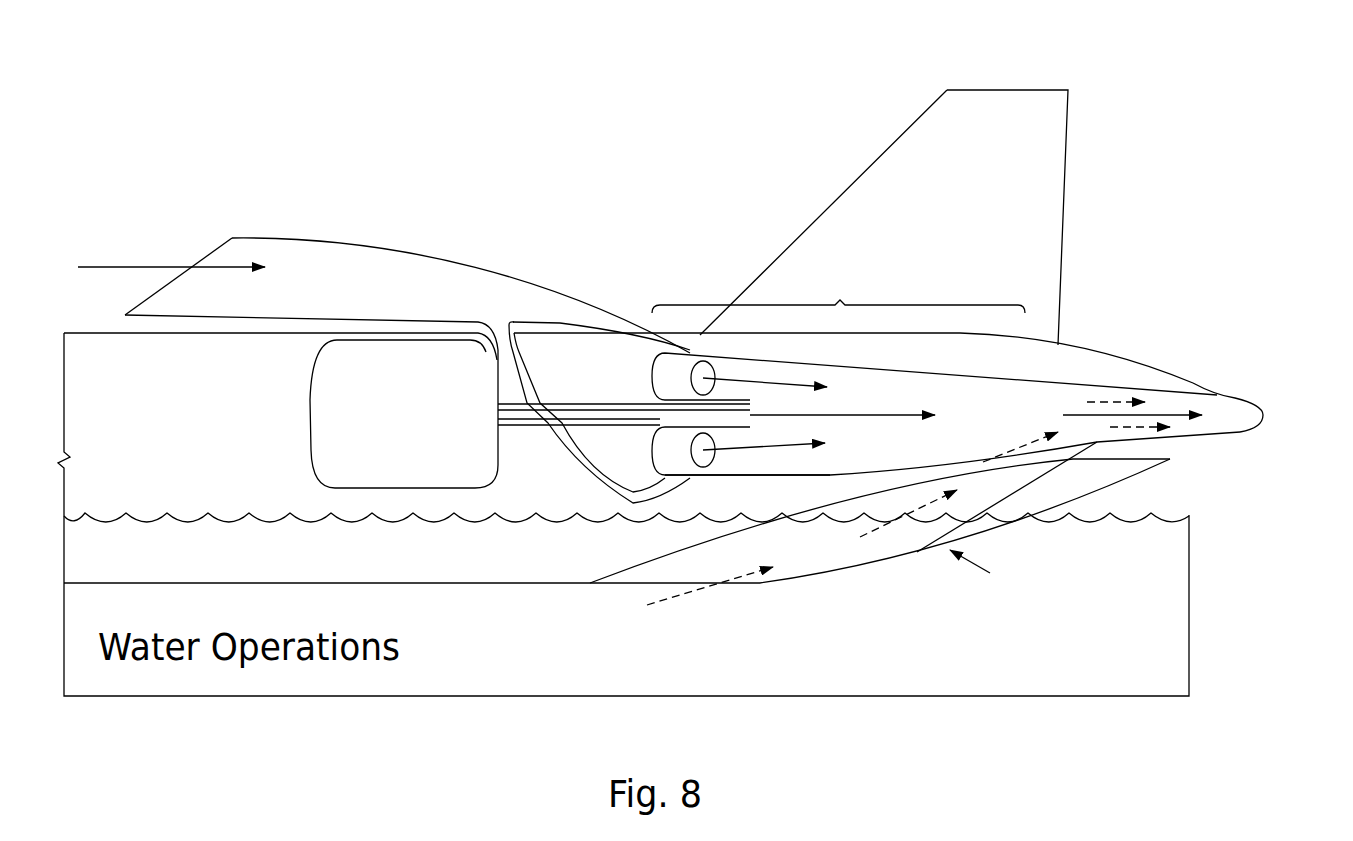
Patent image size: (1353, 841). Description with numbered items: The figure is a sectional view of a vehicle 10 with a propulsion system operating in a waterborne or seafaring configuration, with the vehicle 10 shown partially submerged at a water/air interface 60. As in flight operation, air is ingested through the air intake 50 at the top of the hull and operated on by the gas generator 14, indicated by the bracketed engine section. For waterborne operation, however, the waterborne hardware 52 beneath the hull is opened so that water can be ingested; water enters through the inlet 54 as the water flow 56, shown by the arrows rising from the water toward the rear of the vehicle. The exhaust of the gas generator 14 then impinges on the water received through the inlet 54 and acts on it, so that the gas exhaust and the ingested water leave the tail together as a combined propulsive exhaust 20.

The vehicle 10 is at (1005, 90).
The gas generator 14 is at (934, 357).
The combined propulsive exhaust 20 is at (1230, 403).
The air intake 50 is at (298, 237).
The waterborne hardware 52 is at (1142, 629).
The inlet 54 is at (783, 578).
The water flow 56 is at (898, 522).
The water/air interface 60 is at (1165, 520).